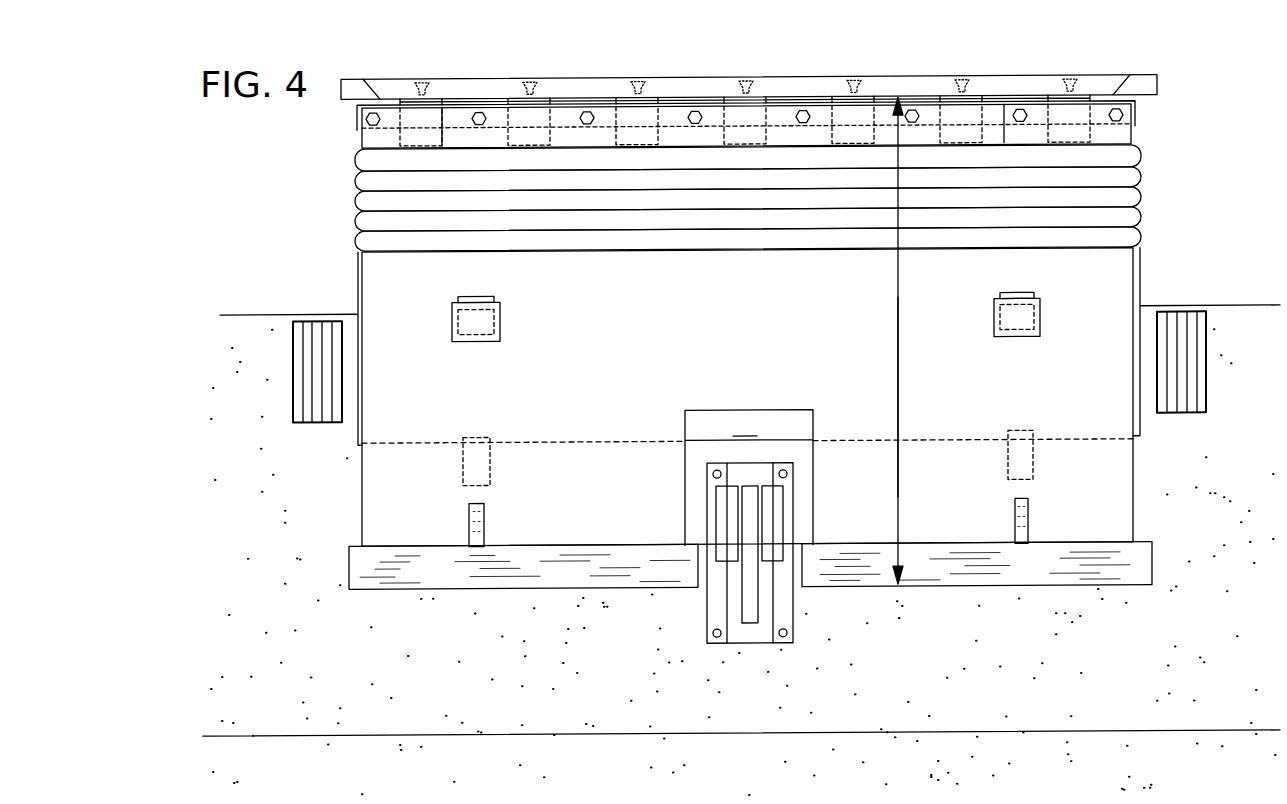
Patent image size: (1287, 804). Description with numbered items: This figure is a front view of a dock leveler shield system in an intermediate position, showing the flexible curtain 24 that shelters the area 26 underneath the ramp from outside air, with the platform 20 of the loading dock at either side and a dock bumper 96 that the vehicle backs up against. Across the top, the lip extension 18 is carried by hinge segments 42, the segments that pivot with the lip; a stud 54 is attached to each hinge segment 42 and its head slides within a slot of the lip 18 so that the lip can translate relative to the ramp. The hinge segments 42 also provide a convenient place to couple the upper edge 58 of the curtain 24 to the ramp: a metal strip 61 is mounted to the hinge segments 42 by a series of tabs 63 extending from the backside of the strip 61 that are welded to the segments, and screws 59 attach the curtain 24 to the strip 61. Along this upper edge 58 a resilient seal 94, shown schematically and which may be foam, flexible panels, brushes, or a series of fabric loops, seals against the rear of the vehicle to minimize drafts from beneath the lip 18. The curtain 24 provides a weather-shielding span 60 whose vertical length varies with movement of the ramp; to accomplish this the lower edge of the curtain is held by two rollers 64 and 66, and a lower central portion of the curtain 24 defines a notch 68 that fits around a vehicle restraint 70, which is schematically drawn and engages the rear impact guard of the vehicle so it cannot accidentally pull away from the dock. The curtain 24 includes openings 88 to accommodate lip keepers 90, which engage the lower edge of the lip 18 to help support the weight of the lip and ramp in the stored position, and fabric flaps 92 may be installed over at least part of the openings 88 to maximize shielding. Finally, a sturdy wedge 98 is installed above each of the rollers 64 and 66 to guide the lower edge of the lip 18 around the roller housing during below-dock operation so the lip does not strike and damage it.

The lip extension 18 is at (574, 79).
The platform 20 is at (258, 314).
The curtain 24 is at (1135, 276).
The area underneath ramp 26 is at (745, 424).
The hinge segment 42 is at (868, 98).
The stud 54 is at (853, 84).
The upper edge of curtain 58 is at (676, 108).
The screw 59 is at (481, 112).
The weather-shielding span 60 is at (897, 405).
The metal strip 61 is at (357, 113).
The tab 63 is at (453, 118).
The roller 64 is at (556, 546).
The roller 66 is at (960, 546).
The notch 68 is at (812, 425).
The vehicle restraint 70 is at (794, 518).
The opening 88 is at (466, 297).
The lip keeper 90 is at (475, 438).
The fabric flap 92 is at (452, 318).
The resilient seal 94 is at (357, 178).
The dock bumper 96 is at (1207, 338).
The wedge 98 is at (468, 530).